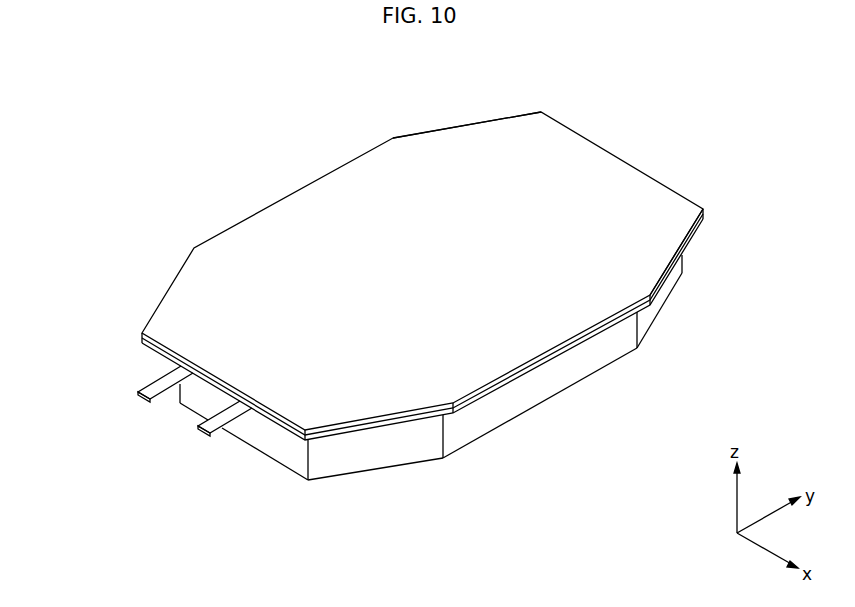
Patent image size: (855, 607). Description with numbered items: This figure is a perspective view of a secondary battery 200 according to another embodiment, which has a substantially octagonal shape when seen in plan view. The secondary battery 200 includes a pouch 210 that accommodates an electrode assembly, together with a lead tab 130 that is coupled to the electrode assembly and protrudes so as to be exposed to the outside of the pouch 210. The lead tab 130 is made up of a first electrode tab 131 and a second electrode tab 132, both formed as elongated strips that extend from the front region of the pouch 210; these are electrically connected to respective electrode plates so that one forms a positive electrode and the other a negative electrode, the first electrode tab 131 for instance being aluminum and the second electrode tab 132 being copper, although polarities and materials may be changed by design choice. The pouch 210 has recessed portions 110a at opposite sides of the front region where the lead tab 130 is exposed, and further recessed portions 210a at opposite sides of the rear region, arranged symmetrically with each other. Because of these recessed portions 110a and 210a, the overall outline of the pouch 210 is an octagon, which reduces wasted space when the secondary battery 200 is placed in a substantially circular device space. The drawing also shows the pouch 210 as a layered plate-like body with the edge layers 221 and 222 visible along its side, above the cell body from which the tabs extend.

The secondary battery 200 is at (716, 112).
The pouch 210 is at (577, 495).
The recessed portions 210a is at (470, 123).
The first layer of cover plate 221 is at (470, 400).
The second layer of cover plate 222 is at (518, 373).
The recessed portions 110a is at (157, 307).
The lead tab 130 is at (73, 373).
The first electrode tab 131 is at (149, 381).
The second electrode tab 132 is at (212, 431).